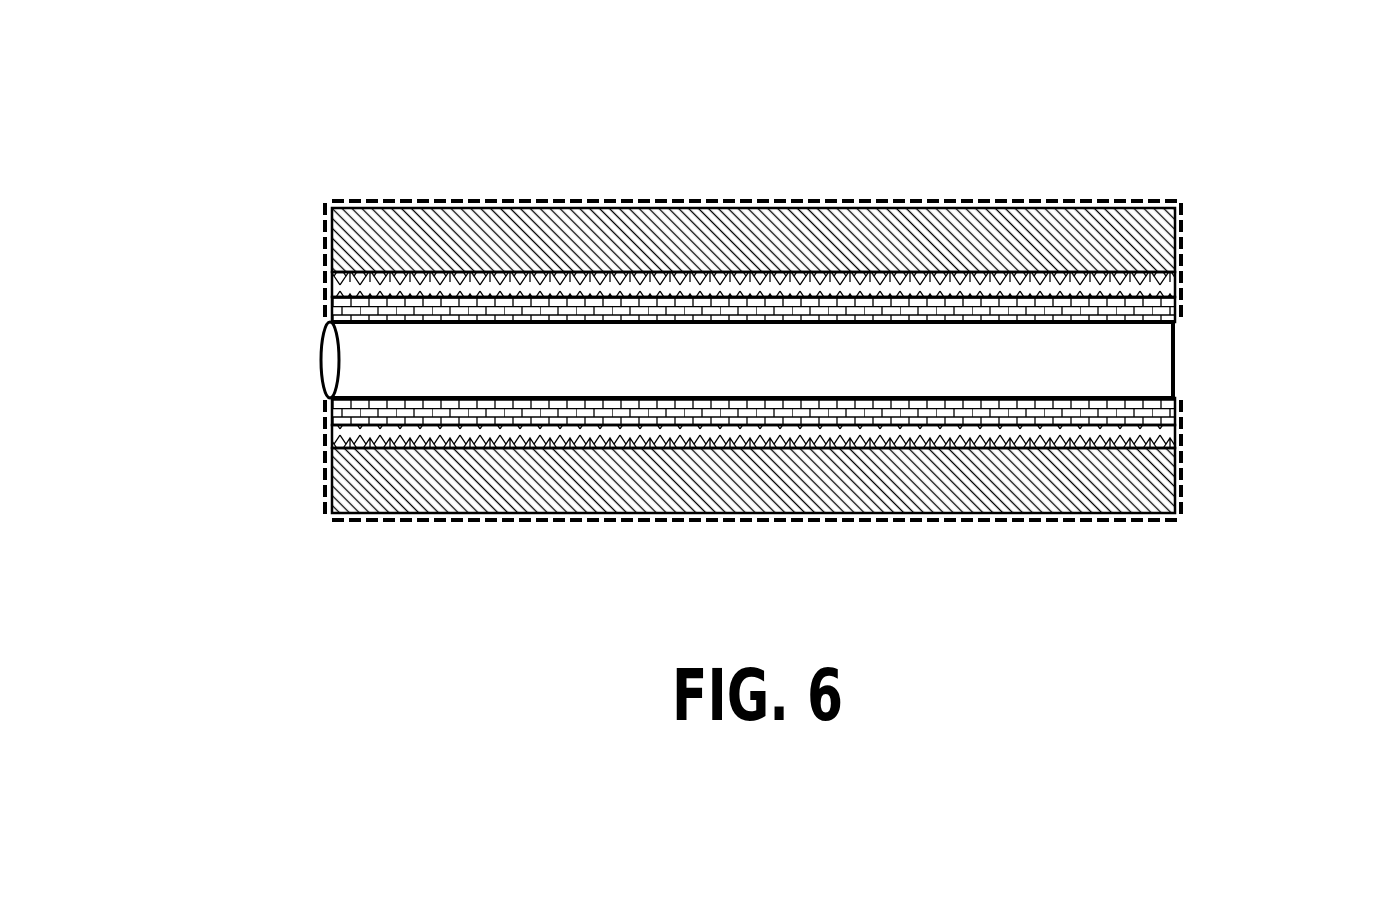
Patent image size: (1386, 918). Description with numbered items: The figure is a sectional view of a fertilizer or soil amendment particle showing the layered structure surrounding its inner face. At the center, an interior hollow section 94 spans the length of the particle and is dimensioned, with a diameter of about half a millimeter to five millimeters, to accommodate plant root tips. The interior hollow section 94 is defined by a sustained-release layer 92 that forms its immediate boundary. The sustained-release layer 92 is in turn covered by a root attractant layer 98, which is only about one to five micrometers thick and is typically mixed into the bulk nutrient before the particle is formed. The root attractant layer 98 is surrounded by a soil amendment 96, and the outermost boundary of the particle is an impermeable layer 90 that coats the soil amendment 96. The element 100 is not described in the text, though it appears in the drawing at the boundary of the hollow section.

The impermeable layer 90 is at (527, 197).
The sustained-release layer 92 is at (1135, 307).
The interior hollow section 94 is at (333, 358).
The soil amendment 96 is at (1108, 488).
The root attractant layer 98 is at (1110, 282).
The tube wall 100 is at (1107, 385).